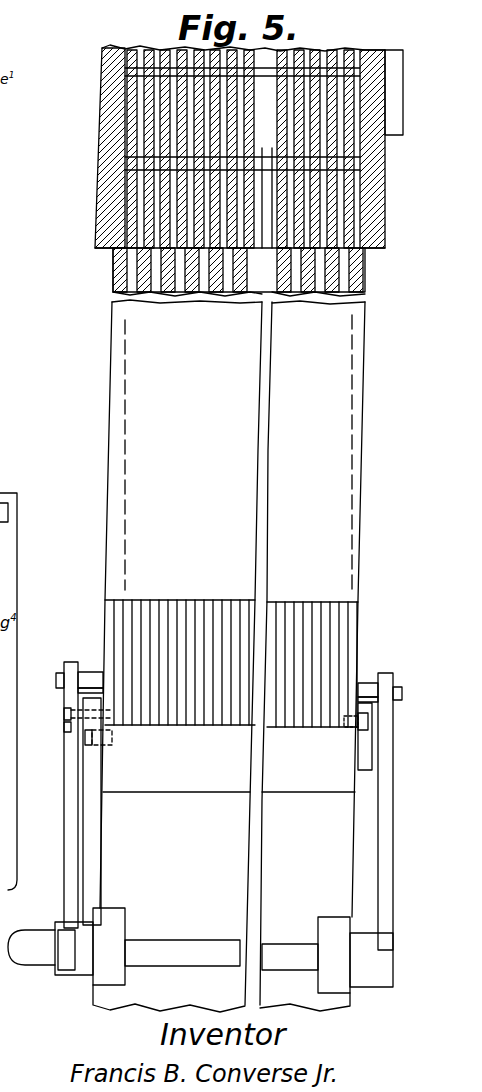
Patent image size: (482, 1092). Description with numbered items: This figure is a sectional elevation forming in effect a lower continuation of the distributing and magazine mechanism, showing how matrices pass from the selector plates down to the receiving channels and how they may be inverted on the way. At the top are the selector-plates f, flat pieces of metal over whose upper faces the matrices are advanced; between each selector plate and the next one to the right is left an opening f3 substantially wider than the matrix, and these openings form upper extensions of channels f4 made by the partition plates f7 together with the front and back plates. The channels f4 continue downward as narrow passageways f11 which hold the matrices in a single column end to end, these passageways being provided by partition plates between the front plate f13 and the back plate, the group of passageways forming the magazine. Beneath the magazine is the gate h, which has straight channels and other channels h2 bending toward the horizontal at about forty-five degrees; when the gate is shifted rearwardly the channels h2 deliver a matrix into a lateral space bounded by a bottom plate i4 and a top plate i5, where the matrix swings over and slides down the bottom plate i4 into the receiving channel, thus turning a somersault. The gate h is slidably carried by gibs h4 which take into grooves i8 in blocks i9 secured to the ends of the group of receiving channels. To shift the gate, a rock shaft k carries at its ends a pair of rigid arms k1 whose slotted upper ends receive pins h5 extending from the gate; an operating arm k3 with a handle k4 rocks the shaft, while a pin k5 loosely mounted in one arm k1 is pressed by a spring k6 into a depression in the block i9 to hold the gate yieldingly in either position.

The selector-plate f is at (240, 137).
The opening f3 is at (362, 54).
The channel f4 is at (355, 205).
The partition plate f7 is at (372, 160).
The passageway f11 is at (140, 270).
The front plate f13 is at (232, 652).
The gate h is at (110, 618).
The channel h2 is at (172, 715).
The gib h4 is at (360, 726).
The pin h5 is at (93, 688).
The bottom plate i4 is at (221, 915).
The top plate i5 is at (229, 765).
The groove i8 is at (100, 722).
The block i9 is at (365, 770).
The rock shaft k is at (160, 952).
The rigid arm k1 is at (68, 853).
The operating arm k3 is at (224, 950).
The handle k4 is at (31, 947).
The pin k5 is at (64, 712).
The spring k6 is at (64, 730).